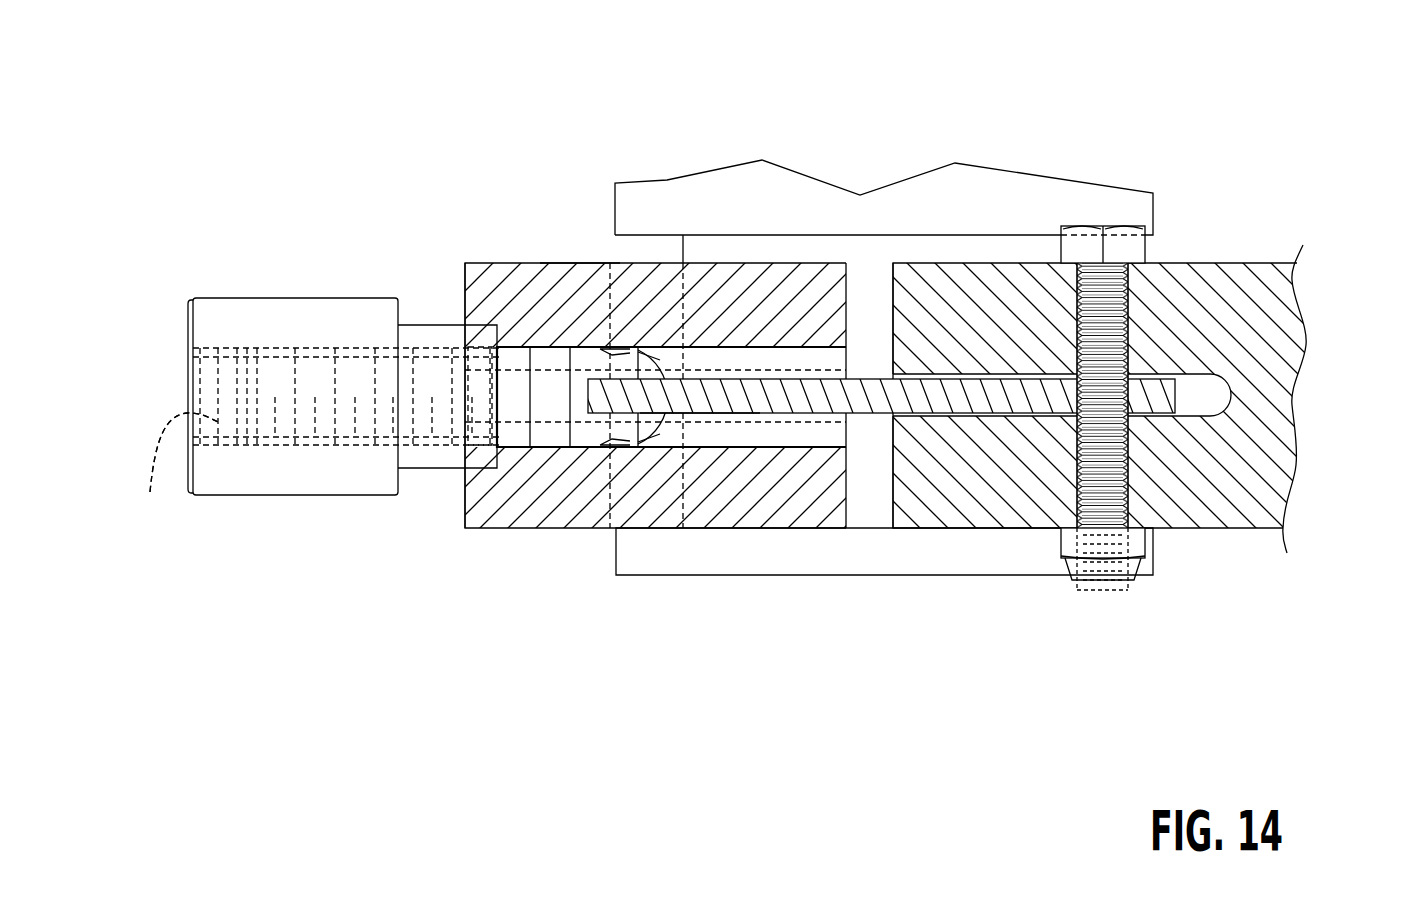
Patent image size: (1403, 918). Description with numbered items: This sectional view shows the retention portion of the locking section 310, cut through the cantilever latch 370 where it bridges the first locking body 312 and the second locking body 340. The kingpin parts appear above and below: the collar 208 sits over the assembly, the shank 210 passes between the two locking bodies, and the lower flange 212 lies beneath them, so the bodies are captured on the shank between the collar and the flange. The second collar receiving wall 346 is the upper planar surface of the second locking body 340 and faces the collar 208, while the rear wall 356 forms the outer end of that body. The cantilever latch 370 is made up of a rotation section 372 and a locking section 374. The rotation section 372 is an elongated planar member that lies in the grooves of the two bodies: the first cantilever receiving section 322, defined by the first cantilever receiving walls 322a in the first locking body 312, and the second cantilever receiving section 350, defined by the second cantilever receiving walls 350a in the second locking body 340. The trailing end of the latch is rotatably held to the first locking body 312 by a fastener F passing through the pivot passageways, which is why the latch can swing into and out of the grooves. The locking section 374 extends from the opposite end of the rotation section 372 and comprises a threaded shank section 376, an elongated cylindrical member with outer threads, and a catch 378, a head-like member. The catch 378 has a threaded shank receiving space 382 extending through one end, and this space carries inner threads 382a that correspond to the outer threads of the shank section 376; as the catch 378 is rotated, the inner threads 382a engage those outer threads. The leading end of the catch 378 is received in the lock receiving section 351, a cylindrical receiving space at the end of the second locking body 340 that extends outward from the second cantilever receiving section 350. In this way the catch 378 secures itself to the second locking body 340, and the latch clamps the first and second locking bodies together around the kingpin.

The collar 208 is at (740, 190).
The shank 210 is at (868, 270).
The lower flange 212 is at (993, 565).
The locking section 310 is at (1273, 262).
The first locking body 312 is at (1218, 265).
The first cantilever receiving section 322 is at (1228, 418).
The first cantilever receiving walls 322a is at (1190, 410).
The second locking body 340 is at (520, 272).
The second collar receiving wall 346 is at (555, 262).
The second cantilever receiving section 350 is at (803, 440).
The second cantilever receiving walls 350a is at (752, 437).
The lock receiving section 351 is at (470, 458).
The rear wall 356 is at (463, 280).
The cantilever latch 370 is at (725, 405).
The rotation section 372 is at (878, 415).
The locking section 374 is at (295, 298).
The threaded shank section 376 is at (538, 448).
The catch 378 is at (185, 300).
The threaded shank receiving space 382 is at (157, 487).
The inner threads 382a is at (185, 452).
The fastener F is at (1108, 228).